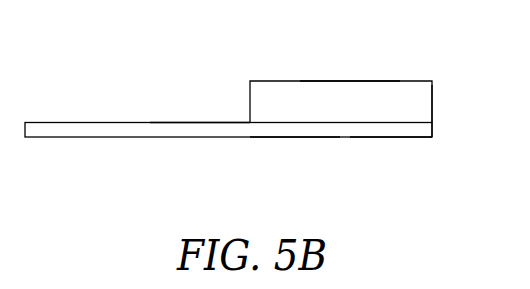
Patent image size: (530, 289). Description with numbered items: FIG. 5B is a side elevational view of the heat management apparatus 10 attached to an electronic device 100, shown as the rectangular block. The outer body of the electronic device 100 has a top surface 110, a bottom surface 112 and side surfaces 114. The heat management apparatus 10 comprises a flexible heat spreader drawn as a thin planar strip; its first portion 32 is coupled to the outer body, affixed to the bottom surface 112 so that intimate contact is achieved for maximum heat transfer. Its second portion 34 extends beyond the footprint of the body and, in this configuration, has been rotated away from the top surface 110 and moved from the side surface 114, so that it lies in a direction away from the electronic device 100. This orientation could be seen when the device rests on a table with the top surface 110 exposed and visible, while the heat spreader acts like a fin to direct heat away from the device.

The heat management apparatus 10 is at (113, 137).
The first portion 32 is at (295, 138).
The second portion 34 is at (206, 122).
The electronic device 100 is at (435, 60).
The top surface 110 is at (342, 81).
The bottom surface 112 is at (390, 123).
The side surfaces 114 is at (432, 108).